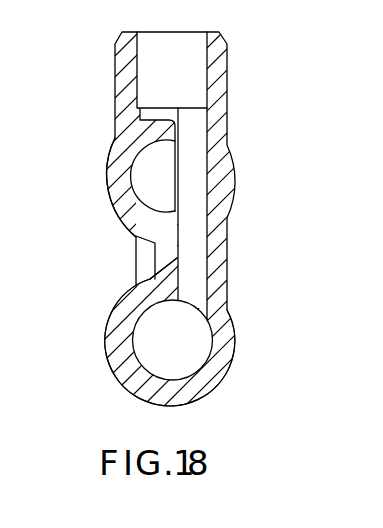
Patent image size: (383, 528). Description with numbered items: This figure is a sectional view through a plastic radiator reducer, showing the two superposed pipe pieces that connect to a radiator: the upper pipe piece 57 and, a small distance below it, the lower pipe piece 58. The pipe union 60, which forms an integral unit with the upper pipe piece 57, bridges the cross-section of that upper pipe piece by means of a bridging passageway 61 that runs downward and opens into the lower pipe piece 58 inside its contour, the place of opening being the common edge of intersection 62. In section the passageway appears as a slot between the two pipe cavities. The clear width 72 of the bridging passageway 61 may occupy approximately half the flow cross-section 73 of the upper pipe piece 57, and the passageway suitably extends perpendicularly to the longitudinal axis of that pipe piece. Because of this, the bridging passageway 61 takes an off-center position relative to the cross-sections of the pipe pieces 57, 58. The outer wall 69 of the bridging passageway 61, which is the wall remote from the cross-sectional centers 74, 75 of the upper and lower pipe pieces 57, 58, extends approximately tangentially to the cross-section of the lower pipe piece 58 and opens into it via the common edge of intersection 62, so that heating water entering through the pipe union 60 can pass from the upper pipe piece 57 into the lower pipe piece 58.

The pipe union 60 is at (119, 57).
The clear width 72 is at (197, 132).
The flow cross-section 73 is at (148, 158).
The upper pipe piece 57 is at (98, 173).
The cross-sectional center 74 is at (135, 203).
The outer wall 69 is at (210, 243).
The bridging passageway 61 is at (217, 269).
The common edge of intersection 62 is at (140, 310).
The lower pipe piece 58 is at (102, 352).
The cross-sectional center 75 is at (172, 340).